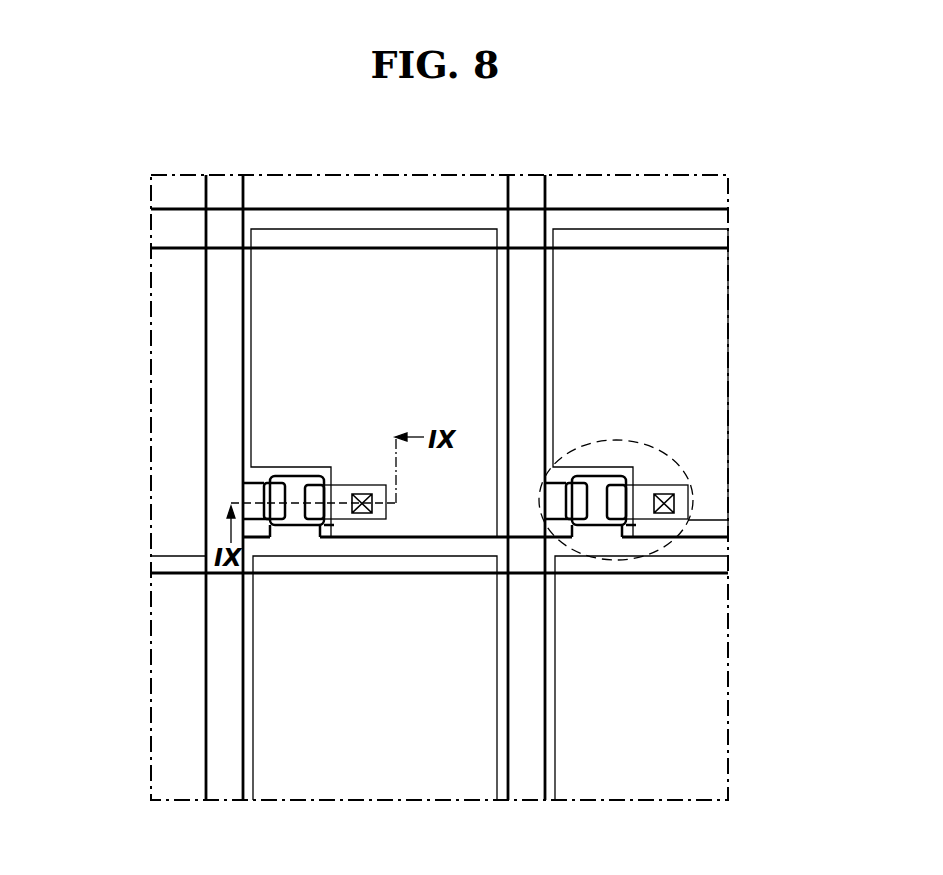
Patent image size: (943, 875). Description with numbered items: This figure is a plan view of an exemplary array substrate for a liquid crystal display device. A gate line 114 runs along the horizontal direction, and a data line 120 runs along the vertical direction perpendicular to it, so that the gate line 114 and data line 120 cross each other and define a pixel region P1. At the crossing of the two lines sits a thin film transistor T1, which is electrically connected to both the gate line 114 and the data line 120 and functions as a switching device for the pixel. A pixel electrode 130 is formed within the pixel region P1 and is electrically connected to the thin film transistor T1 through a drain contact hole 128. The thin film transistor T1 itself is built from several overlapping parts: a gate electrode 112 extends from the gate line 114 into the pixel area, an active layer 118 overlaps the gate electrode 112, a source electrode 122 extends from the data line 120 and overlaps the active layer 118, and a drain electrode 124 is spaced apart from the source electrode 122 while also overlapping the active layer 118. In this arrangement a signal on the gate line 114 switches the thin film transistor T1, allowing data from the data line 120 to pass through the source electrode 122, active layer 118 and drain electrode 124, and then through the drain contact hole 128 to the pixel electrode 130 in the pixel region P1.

The gate electrode 112 is at (603, 476).
The gate line 114 is at (715, 545).
The active layer 118 is at (603, 522).
The data line 120 is at (220, 395).
The source electrode 122 is at (548, 501).
The drain electrode 124 is at (693, 500).
The drain contact hole 128 is at (670, 492).
The pixel electrode 130 is at (498, 328).
The pixel region P1 is at (499, 288).
The thin film transistor T1 is at (678, 542).